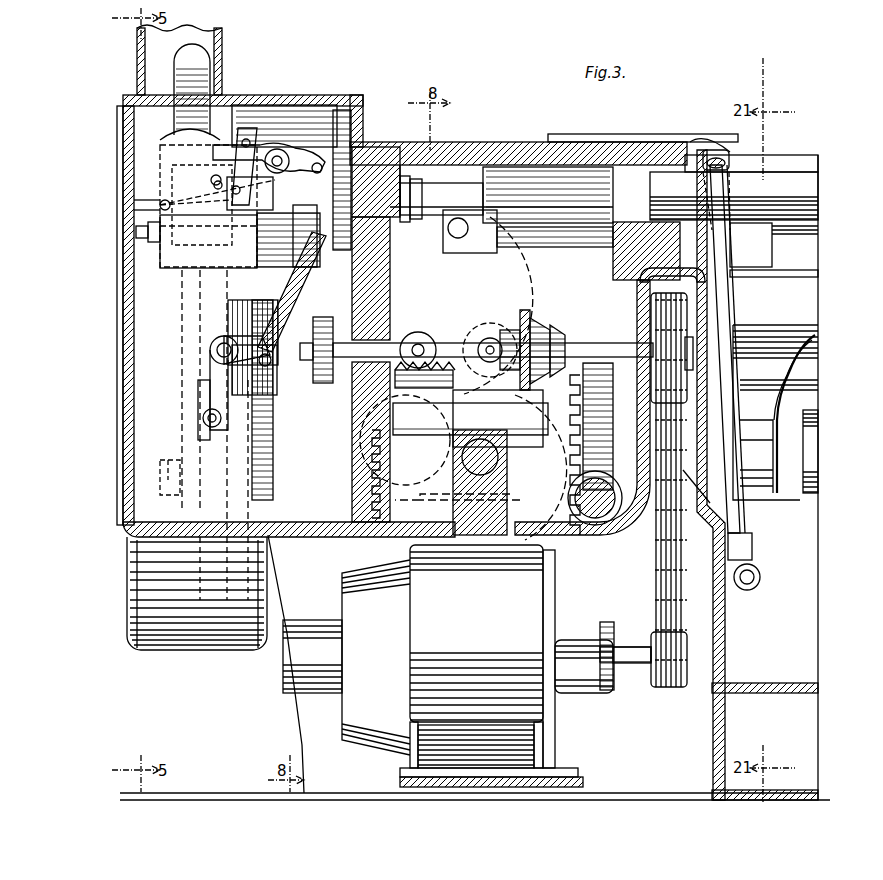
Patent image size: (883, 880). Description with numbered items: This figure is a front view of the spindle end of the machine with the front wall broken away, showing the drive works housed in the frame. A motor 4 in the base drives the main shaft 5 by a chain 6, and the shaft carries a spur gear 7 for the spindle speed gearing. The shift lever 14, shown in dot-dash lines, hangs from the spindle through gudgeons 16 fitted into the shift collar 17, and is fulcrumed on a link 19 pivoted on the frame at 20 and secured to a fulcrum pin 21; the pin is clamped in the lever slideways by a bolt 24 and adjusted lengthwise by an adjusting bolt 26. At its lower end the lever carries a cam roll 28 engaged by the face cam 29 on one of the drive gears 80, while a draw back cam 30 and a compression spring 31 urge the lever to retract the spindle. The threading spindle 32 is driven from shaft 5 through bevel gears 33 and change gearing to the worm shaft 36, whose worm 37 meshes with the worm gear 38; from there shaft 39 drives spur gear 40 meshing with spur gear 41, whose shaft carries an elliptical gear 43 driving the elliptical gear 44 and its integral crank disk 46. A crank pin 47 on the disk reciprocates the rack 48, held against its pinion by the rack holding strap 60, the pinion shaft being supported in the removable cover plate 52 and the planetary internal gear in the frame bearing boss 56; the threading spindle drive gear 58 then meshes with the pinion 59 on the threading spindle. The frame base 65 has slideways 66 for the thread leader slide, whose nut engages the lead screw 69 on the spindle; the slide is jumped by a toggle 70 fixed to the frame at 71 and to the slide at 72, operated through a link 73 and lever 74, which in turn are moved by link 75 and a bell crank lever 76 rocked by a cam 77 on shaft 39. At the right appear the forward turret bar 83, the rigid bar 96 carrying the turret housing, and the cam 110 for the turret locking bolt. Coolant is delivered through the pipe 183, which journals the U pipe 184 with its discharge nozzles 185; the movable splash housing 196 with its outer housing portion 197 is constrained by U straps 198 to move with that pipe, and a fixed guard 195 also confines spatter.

The motor 4 is at (467, 666).
The shaft 5 is at (600, 346).
The chain 6 is at (656, 600).
The spur gear 7 is at (325, 317).
The shift lever 14 is at (528, 310).
The gudgeons 16 is at (488, 197).
The shift collar 17 is at (500, 255).
The shackle or link mechanism 19 is at (480, 340).
The pivot 20 is at (415, 332).
The fulcrum pin 21 is at (490, 322).
The bolt 24 is at (543, 343).
The adjusting bolt 26 is at (497, 233).
The cam roll 28 is at (452, 452).
The face cam 29 is at (520, 486).
The draw back cam 30 is at (405, 456).
The compression spring 31 is at (425, 376).
The threading spindle 32 is at (555, 247).
The bevel gears 33 is at (562, 334).
The worm shaft 36 is at (590, 526).
The worm 37 is at (615, 528).
The worm gear 38 is at (582, 455).
The shaft 39 is at (470, 418).
The spur gear 40 is at (274, 478).
The spur gear 41 is at (258, 300).
The elliptical gear 43 is at (232, 325).
The elliptical gear 44 is at (272, 560).
The crank disk 46 is at (210, 650).
The crank pin 47 is at (163, 468).
The rack 48 is at (182, 320).
The removable cover plate 52 is at (122, 130).
The frame bearing boss 56 is at (240, 108).
The threading spindle drive gear 58 is at (362, 117).
The pinion 59 is at (340, 262).
The rack holding strap 60 is at (185, 137).
The base 65 is at (160, 162).
The slideways 66 is at (163, 252).
The lead screw 69 is at (136, 235).
The toggle 70 is at (215, 182).
The frame fixing point 71 is at (134, 205).
The slide fixing point 72 is at (217, 192).
The link 73 is at (256, 130).
The lever 74 is at (290, 156).
The link 75 is at (290, 300).
The bell crank lever 76 is at (215, 388).
The cam 77 is at (196, 433).
The drive gears 80 is at (395, 497).
The forward turret bar or stem 83 is at (800, 197).
The rigid bar 96 is at (805, 392).
The cam 110 is at (814, 458).
The pipe 183 is at (757, 586).
The U pipe 184 is at (734, 306).
The coolant discharge nozzles 185 is at (720, 180).
The guard 195 is at (806, 310).
The movable splash housing 196 is at (762, 160).
The outer housing portion 197 is at (690, 135).
The U straps 198 is at (700, 138).